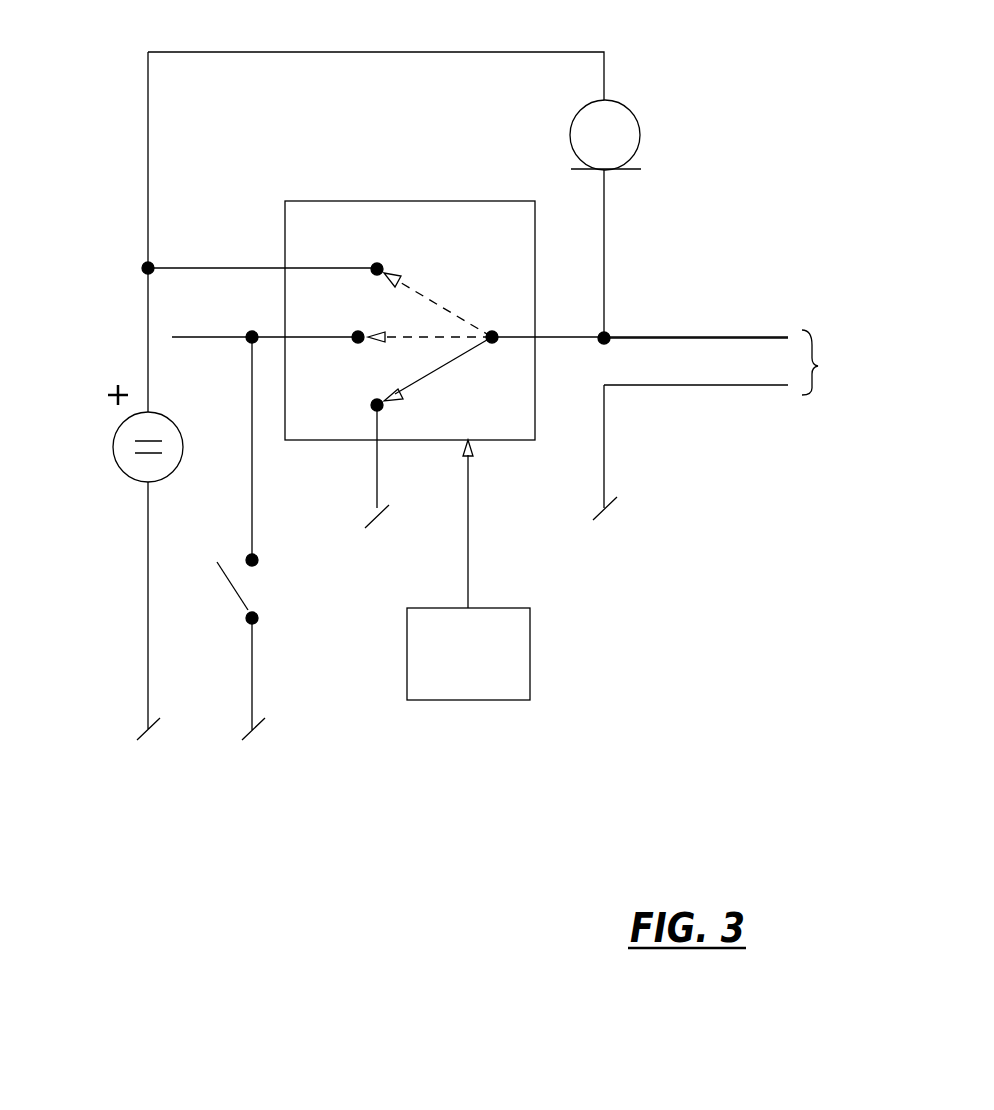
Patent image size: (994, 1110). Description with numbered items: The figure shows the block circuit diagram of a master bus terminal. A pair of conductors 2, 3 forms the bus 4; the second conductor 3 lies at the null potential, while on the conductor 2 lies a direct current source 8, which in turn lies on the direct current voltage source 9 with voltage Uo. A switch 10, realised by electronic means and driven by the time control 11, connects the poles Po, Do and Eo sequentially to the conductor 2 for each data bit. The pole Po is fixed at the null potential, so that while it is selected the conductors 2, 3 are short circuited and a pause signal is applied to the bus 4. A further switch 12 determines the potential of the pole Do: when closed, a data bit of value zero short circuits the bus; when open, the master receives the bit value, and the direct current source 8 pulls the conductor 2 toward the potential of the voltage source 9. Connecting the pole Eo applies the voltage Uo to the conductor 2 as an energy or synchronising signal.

The conductor 2 is at (685, 338).
The second conductor 3 is at (718, 385).
The bus 4 is at (808, 396).
The direct current source 8 is at (618, 100).
The direct current voltage source 9 is at (133, 480).
The switch 10 is at (513, 201).
The time control 11 is at (435, 700).
The further switch 12 is at (233, 590).